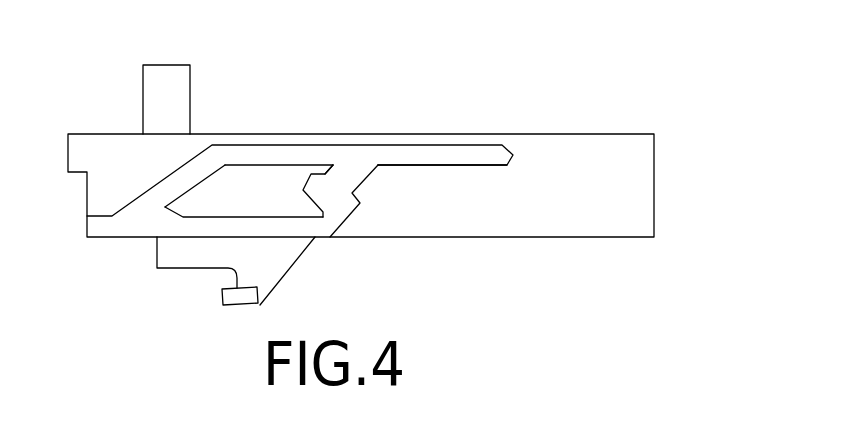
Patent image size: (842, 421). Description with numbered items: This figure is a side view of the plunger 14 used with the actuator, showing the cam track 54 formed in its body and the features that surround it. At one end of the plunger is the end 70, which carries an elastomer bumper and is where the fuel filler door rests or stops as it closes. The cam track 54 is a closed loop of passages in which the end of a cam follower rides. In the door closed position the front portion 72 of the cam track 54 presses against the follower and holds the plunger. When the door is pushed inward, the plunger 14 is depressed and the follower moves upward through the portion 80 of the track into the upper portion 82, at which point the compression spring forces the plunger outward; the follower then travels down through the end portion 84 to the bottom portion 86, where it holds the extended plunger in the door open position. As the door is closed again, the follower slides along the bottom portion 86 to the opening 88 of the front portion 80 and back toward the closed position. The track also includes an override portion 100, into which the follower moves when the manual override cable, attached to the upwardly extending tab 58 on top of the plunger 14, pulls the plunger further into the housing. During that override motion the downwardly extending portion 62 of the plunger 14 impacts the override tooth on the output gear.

The plunger 14 is at (577, 105).
The cam track 54 is at (332, 157).
The upwardly extending tab 58 is at (152, 77).
The downwardly extending portion 62 is at (218, 297).
The end of the plunger 70 is at (654, 190).
The front portion of the cam track 72 is at (315, 193).
The portion of the track 80 is at (343, 175).
The upper portion of the track 82 is at (275, 165).
The end portion of the track 84 is at (175, 192).
The bottom portion of the track 86 is at (123, 223).
The opening of the front portion 88 is at (323, 227).
The override portion of the track 100 is at (438, 163).